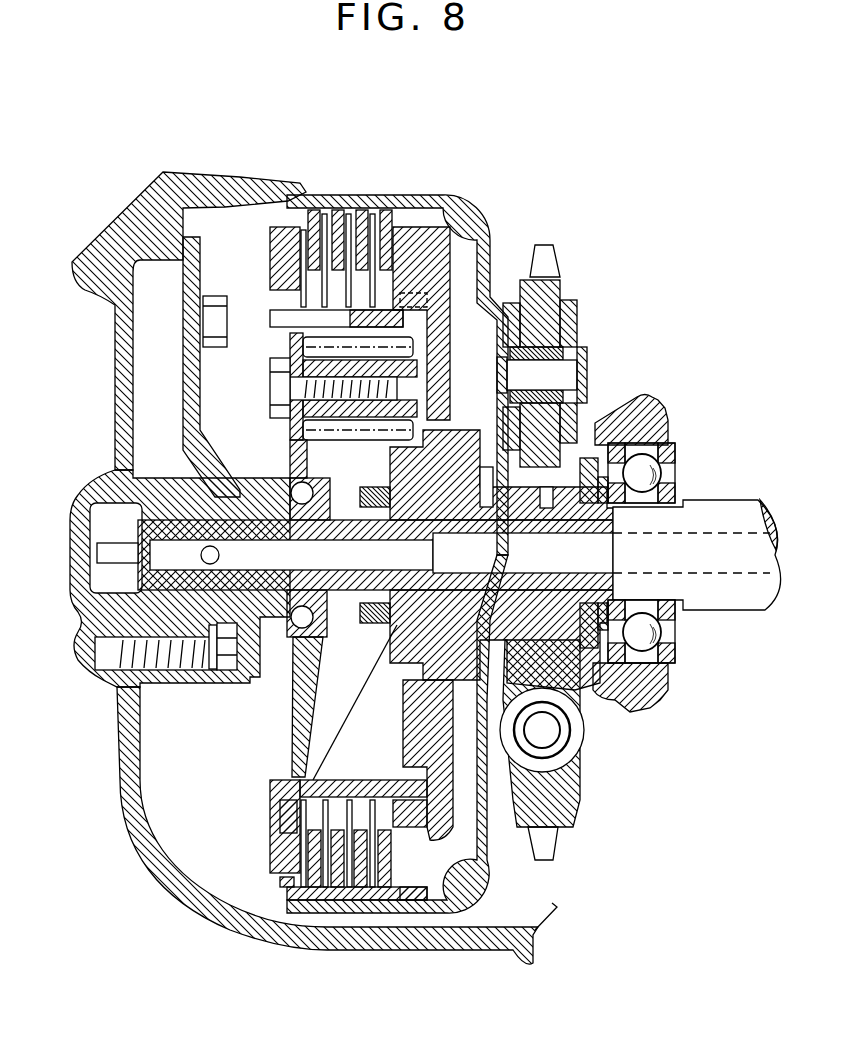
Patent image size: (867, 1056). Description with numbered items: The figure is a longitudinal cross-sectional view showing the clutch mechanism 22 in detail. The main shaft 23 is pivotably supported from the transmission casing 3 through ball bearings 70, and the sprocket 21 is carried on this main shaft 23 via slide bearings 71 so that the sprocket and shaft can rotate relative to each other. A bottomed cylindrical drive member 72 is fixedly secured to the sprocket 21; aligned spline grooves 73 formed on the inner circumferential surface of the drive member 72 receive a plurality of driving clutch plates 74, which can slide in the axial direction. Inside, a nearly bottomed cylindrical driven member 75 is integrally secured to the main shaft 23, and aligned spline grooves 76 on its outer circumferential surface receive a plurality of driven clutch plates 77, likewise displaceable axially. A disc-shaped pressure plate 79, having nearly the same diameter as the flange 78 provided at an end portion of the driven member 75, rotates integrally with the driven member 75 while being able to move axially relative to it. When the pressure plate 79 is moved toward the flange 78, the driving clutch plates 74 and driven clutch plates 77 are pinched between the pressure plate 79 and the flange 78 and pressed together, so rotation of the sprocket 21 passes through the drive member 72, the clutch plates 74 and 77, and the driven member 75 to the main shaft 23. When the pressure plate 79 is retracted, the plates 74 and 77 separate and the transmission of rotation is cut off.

The driven clutch plates 77 is at (400, 208).
The clutch mechanism 22 is at (577, 237).
The spline grooves 76 is at (387, 307).
The sprocket 21 is at (560, 290).
The transmission casing 3 is at (657, 405).
The slide bearings 71 is at (575, 483).
The ball bearings 70 is at (677, 470).
The main shaft 23 is at (737, 500).
The pressure plate 79 is at (447, 755).
The driven member 75 is at (272, 790).
The spline grooves 73 is at (423, 900).
The drive member 72 is at (488, 880).
The flange 78 is at (297, 887).
The driving clutch plates 74 is at (427, 893).